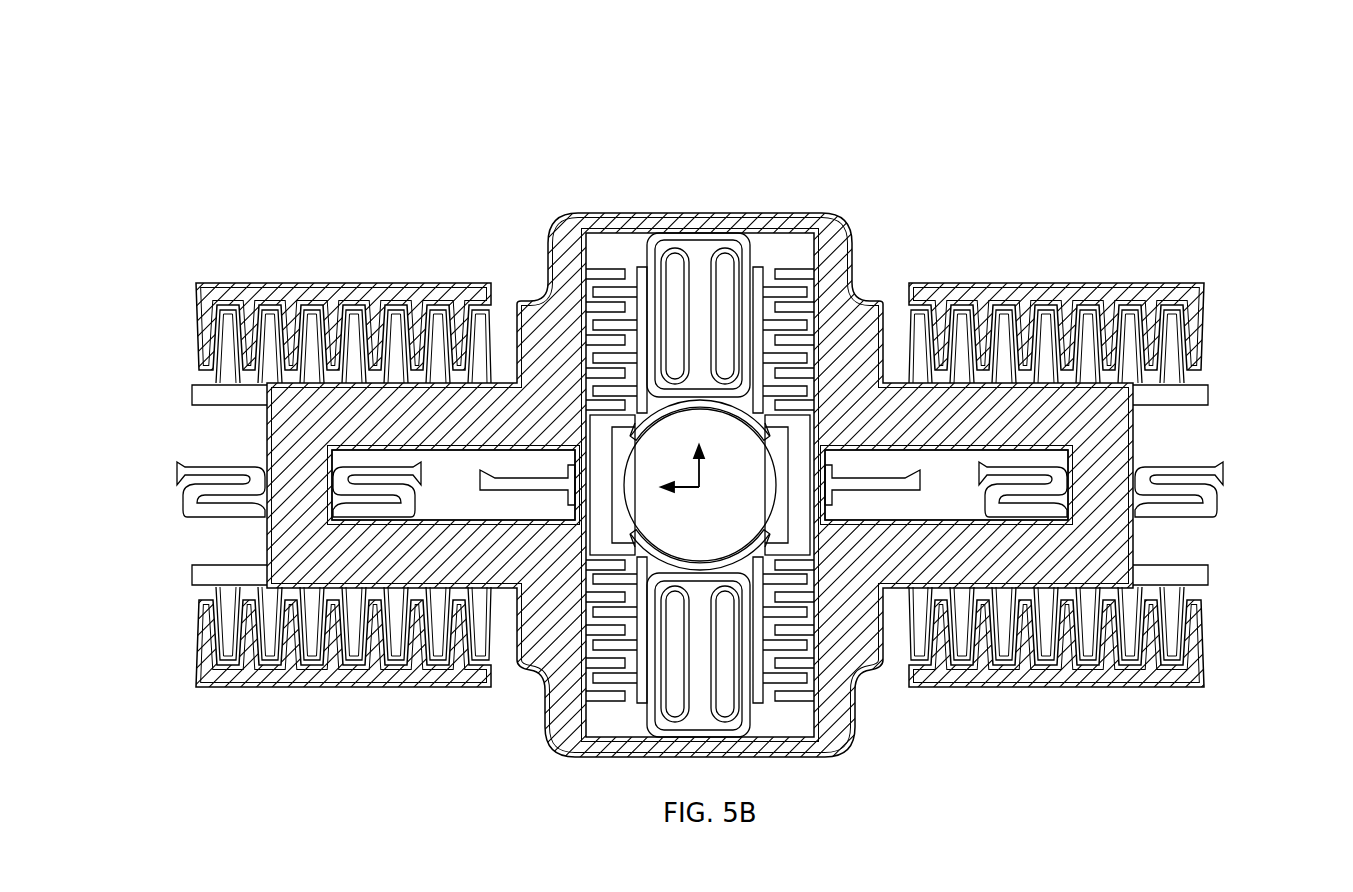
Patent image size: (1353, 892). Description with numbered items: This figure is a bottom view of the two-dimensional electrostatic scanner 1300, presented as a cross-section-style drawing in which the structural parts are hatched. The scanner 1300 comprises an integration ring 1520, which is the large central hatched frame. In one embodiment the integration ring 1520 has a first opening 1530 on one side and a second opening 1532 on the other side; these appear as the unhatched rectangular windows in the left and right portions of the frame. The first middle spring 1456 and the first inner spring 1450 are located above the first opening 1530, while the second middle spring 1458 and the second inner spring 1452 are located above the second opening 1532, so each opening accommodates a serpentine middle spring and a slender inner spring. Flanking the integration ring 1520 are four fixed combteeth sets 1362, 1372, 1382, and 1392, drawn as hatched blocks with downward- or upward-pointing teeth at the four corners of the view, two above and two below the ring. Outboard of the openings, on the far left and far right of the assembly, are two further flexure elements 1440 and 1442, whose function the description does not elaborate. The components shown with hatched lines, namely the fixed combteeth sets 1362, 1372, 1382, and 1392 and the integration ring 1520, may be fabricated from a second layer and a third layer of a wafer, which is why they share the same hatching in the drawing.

The two-dimensional electrostatic scanner 1300 is at (676, 446).
The integration ring 1520 is at (830, 318).
The fixed combteeth set 1362 is at (188, 345).
The fixed combteeth set 1372 is at (1212, 345).
The fixed combteeth set 1392 is at (188, 623).
The fixed combteeth set 1382 is at (1212, 623).
The outer flexure (left) 1440 is at (240, 460).
The outer flexure (right) 1442 is at (1157, 462).
The first middle spring 1456 is at (355, 458).
The second middle spring 1458 is at (1043, 460).
The first inner spring 1450 is at (530, 483).
The second inner spring 1452 is at (868, 484).
The first opening 1530 is at (452, 480).
The second opening 1532 is at (948, 480).